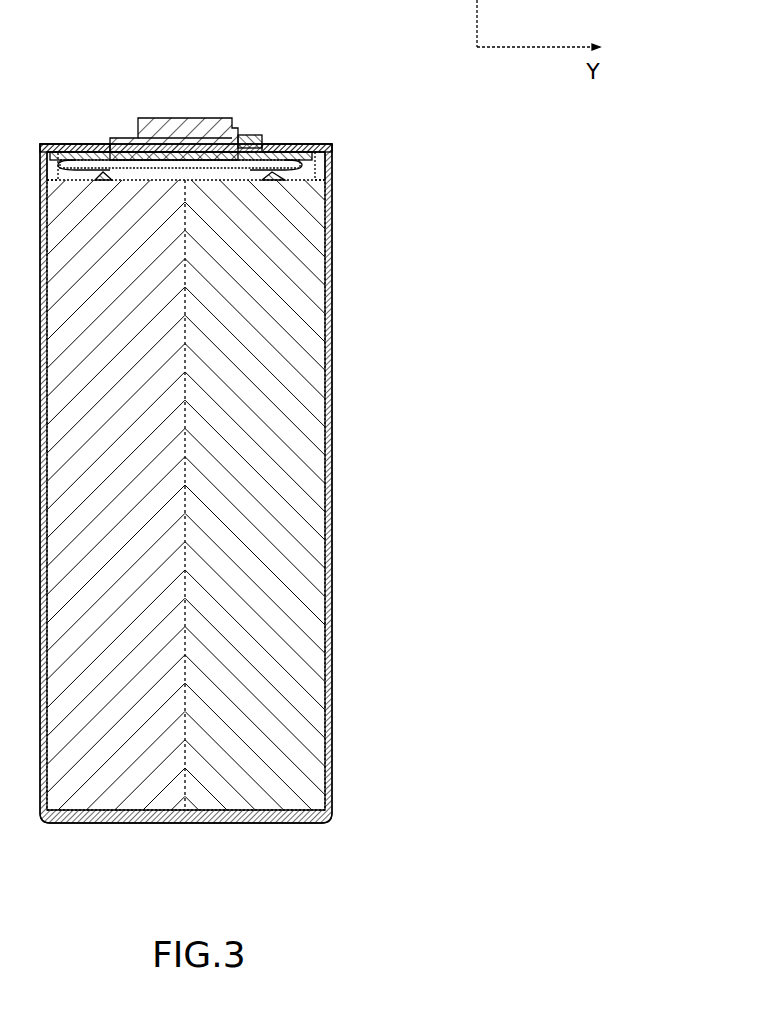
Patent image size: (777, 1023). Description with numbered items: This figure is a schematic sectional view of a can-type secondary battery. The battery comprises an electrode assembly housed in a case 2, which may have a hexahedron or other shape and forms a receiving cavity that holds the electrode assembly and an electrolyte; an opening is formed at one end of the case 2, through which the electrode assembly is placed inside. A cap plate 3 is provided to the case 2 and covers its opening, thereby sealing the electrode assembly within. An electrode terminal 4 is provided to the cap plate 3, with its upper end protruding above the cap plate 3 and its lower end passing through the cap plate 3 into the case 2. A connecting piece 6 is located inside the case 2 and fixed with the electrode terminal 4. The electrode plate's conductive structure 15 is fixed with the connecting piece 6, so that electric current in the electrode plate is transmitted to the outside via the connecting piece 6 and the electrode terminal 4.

The case 2 is at (335, 300).
The cap plate 3 is at (88, 142).
The electrode terminal 4 is at (180, 117).
The connecting piece 6 is at (272, 143).
The conductive structure 15 is at (310, 144).